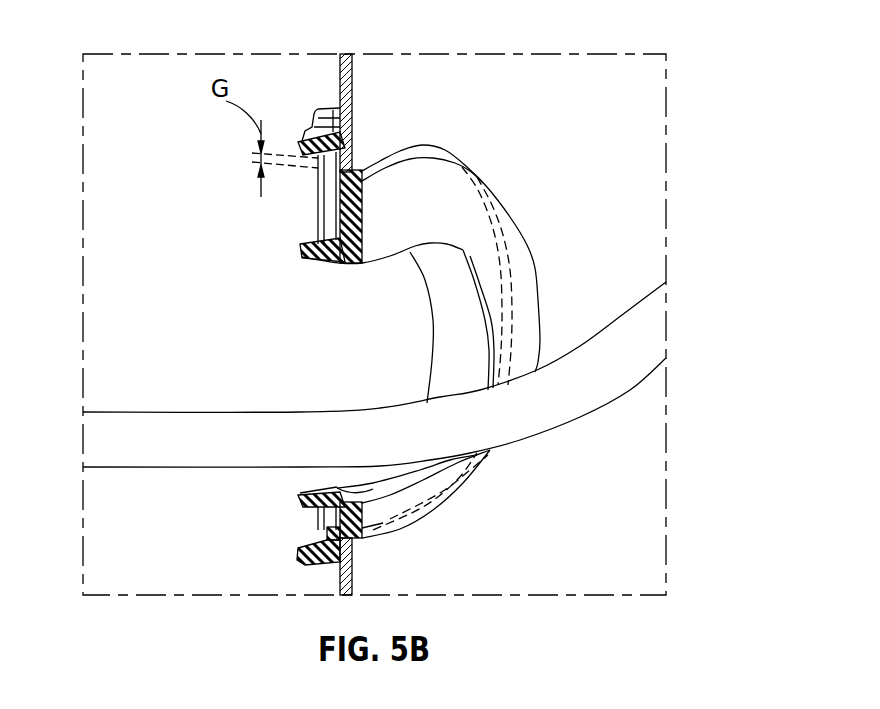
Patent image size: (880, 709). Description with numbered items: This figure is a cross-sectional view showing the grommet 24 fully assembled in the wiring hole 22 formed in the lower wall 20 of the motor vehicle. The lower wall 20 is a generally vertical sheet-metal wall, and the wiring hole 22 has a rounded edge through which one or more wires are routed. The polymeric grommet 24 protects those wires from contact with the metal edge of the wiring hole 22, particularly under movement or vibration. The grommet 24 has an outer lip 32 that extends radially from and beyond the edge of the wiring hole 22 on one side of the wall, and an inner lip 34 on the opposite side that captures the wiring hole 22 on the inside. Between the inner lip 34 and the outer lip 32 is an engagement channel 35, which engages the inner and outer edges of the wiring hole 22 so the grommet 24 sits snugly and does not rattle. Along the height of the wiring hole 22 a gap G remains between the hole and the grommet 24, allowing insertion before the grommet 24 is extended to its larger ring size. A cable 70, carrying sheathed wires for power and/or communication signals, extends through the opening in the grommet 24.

The lower wall 20 is at (340, 82).
The wiring hole 22 is at (507, 242).
The grommet 24 is at (500, 186).
The outer lip 32 is at (540, 293).
The inner lip 34 is at (298, 251).
The engagement channel 35 is at (447, 313).
The cable 70 is at (602, 385).